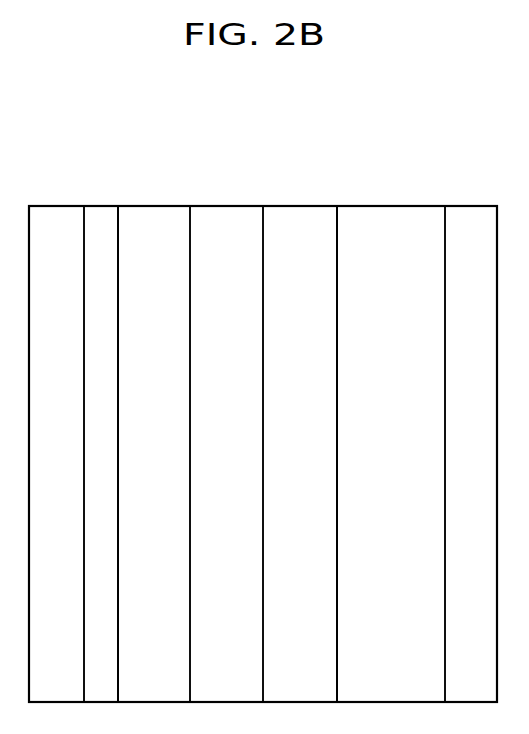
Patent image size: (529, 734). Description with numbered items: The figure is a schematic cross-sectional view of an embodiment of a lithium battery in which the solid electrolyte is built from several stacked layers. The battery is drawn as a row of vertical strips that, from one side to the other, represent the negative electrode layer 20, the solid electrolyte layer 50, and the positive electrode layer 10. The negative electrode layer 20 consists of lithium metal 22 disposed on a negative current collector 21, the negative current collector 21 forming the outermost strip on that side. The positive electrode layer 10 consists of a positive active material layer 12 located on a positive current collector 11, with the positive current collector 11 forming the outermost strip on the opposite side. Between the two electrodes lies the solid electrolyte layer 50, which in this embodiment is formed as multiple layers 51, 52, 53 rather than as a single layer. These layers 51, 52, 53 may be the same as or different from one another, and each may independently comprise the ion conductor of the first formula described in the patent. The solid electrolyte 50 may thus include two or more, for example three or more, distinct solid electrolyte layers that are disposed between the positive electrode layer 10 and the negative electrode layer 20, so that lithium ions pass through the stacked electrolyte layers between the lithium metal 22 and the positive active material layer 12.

The positive electrode layer 10 is at (387, 151).
The positive current collector 11 is at (469, 213).
The positive active material layer 12 is at (396, 213).
The negative electrode layer 20 is at (47, 151).
The negative current collector 21 is at (58, 213).
The lithium metal 22 is at (98, 213).
The solid electrolyte layer 50 is at (148, 151).
The solid electrolyte layer 51 is at (156, 213).
The solid electrolyte layer 52 is at (227, 213).
The solid electrolyte layer 53 is at (301, 213).